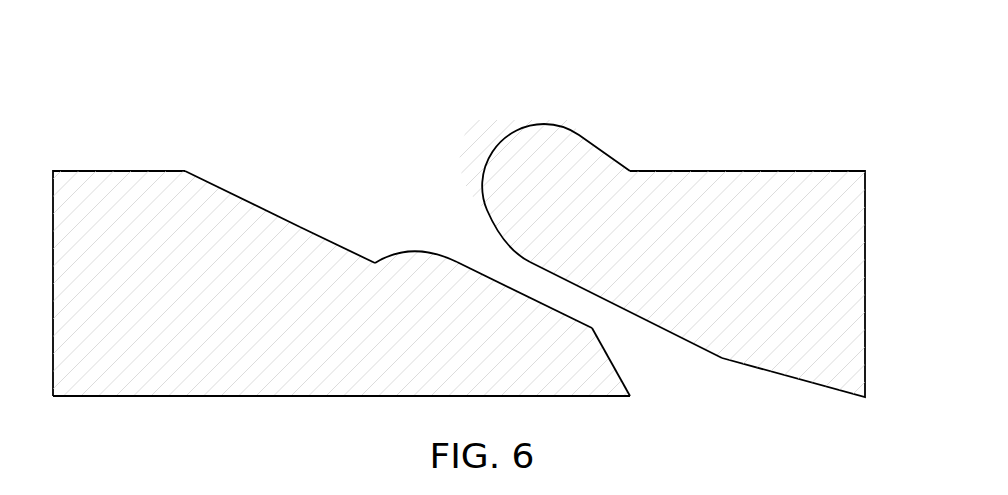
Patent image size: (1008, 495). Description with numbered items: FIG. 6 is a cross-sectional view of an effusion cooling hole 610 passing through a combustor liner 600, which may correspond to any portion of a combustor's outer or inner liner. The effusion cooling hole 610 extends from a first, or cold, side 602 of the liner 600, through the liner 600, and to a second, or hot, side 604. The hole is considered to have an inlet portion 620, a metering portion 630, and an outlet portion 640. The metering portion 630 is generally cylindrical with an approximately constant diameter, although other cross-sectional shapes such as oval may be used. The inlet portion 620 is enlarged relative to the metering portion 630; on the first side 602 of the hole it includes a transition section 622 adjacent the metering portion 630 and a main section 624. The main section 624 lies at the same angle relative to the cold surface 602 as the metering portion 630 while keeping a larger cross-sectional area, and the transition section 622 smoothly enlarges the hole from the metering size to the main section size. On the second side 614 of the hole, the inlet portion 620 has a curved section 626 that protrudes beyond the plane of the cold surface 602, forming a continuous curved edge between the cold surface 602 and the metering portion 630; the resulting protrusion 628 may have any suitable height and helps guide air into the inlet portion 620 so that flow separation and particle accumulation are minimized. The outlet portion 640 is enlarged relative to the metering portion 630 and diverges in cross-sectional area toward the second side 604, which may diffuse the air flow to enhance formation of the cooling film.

The combustor liner 600 is at (705, 188).
The first (cold) side 602 is at (90, 170).
The second (hot) side 604 is at (133, 395).
The effusion cooling hole 610 is at (325, 100).
The second side of the effusion cooling hole 614 is at (520, 250).
The inlet portion 620 is at (248, 175).
The transition section 622 is at (417, 252).
The main section 624 is at (312, 234).
The curved section 626 is at (482, 175).
The protrusion 628 is at (547, 123).
The metering portion 630 is at (457, 262).
The outlet portion 640 is at (608, 363).